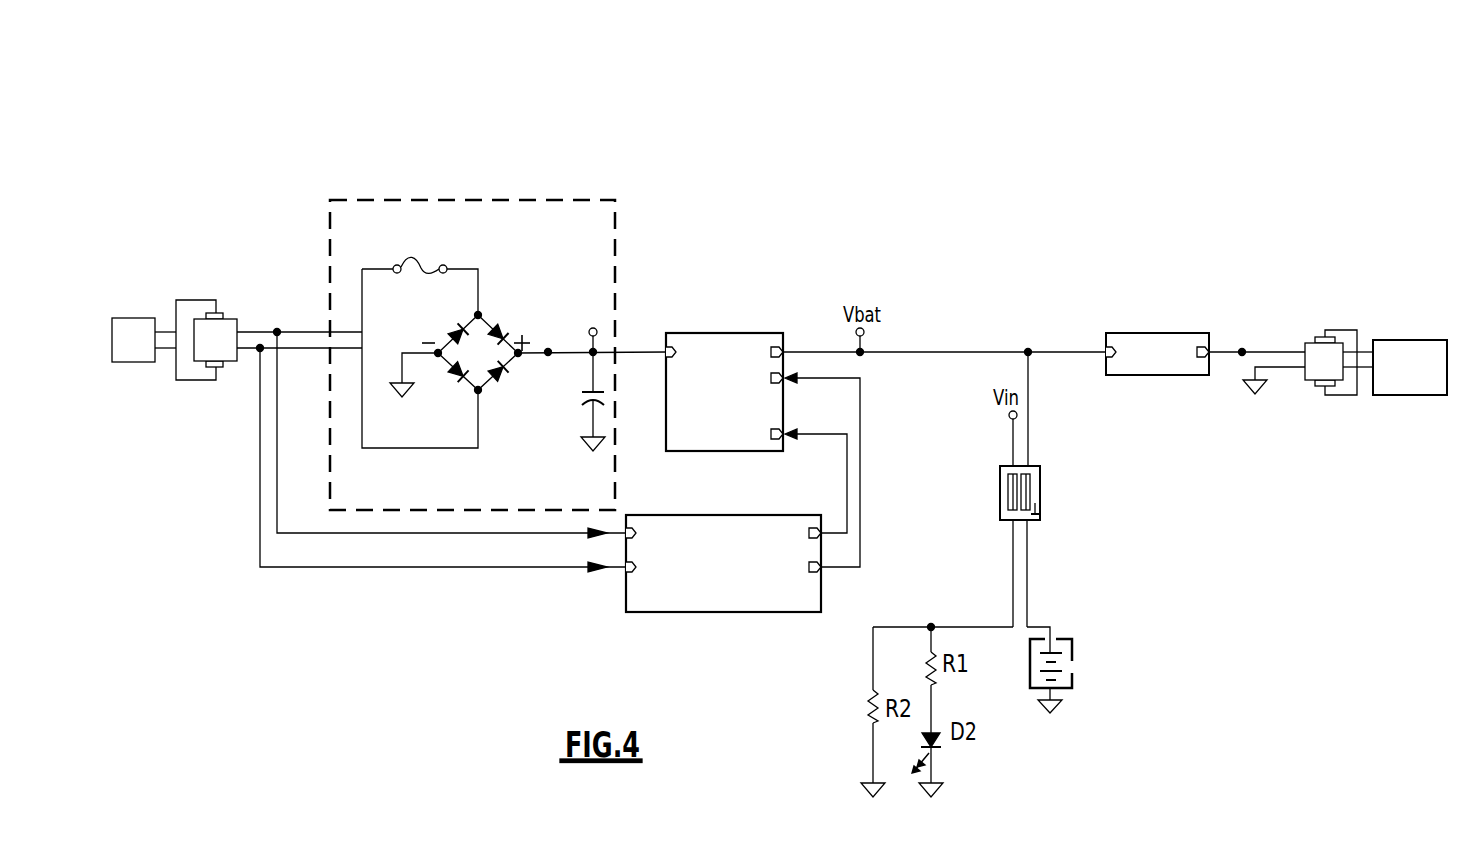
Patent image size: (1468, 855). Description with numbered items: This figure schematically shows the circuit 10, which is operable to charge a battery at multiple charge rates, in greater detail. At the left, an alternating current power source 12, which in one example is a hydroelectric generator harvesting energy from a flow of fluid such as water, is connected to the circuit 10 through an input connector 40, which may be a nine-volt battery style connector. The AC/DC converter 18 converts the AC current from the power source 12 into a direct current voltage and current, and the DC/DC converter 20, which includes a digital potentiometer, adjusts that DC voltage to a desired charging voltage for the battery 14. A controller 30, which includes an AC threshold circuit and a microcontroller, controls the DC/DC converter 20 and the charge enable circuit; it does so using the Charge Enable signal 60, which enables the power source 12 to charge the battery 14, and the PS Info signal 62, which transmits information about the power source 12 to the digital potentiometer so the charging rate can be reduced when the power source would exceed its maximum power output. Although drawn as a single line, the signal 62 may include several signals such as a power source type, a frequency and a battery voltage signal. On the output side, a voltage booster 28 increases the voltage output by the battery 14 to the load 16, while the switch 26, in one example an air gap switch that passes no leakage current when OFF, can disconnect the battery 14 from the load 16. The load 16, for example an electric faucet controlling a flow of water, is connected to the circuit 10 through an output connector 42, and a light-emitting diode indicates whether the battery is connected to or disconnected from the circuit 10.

The circuit 10 is at (176, 184).
The AC power source 12 is at (142, 356).
The input connector 40 is at (225, 330).
The AC/DC converter 18 is at (330, 205).
The DC/DC converter 20 is at (713, 333).
The controller 30 is at (713, 515).
The Charge Enable signal 60 is at (838, 568).
The PS Info signal 62 is at (832, 530).
The voltage booster 28 is at (1160, 347).
The output connector 42 is at (1307, 376).
The load 16 is at (1413, 395).
The switch 26 is at (1040, 488).
The battery 14 is at (1072, 672).